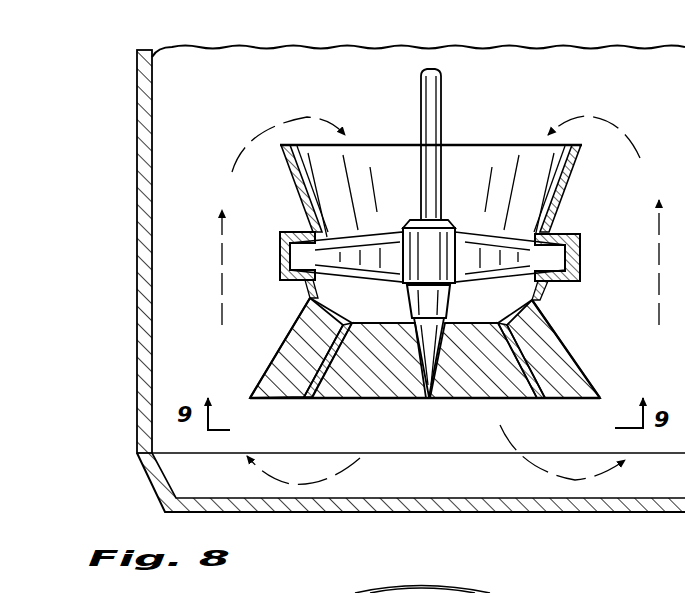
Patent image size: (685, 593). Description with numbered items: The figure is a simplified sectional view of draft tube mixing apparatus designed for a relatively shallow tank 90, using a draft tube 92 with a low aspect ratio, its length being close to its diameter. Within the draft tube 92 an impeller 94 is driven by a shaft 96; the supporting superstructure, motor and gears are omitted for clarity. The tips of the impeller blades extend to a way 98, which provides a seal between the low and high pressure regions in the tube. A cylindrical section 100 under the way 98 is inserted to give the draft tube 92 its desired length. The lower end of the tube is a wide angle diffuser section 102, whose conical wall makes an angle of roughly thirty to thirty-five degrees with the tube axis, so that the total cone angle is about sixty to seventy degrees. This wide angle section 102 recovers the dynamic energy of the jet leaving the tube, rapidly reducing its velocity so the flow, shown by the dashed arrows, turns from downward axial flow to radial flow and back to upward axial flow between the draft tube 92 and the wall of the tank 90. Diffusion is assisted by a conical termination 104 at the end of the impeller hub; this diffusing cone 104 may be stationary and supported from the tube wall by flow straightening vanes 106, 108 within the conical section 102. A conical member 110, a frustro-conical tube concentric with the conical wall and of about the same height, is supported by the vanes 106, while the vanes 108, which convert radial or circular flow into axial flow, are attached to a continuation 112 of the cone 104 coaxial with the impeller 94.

The tank 90 is at (623, 513).
The draft tube 92 is at (553, 206).
The impeller 94 is at (477, 240).
The shaft 96 is at (423, 119).
The way 98 is at (578, 261).
The cylindrical section 100 is at (546, 287).
The wide angle diffuser section 102 is at (570, 345).
The conical termination 104 is at (449, 300).
The flow straightening vanes 106 is at (273, 403).
The flow straightening vanes 108 is at (357, 402).
The conical member 110 is at (323, 402).
The continuation 112 is at (430, 399).